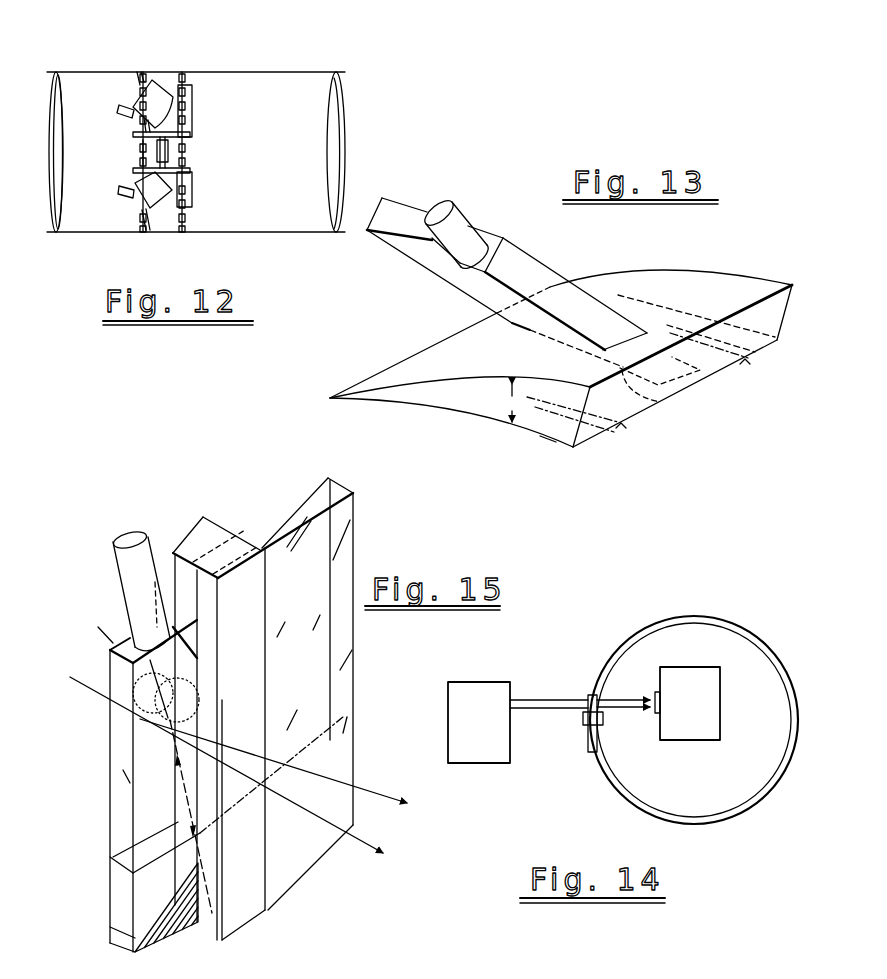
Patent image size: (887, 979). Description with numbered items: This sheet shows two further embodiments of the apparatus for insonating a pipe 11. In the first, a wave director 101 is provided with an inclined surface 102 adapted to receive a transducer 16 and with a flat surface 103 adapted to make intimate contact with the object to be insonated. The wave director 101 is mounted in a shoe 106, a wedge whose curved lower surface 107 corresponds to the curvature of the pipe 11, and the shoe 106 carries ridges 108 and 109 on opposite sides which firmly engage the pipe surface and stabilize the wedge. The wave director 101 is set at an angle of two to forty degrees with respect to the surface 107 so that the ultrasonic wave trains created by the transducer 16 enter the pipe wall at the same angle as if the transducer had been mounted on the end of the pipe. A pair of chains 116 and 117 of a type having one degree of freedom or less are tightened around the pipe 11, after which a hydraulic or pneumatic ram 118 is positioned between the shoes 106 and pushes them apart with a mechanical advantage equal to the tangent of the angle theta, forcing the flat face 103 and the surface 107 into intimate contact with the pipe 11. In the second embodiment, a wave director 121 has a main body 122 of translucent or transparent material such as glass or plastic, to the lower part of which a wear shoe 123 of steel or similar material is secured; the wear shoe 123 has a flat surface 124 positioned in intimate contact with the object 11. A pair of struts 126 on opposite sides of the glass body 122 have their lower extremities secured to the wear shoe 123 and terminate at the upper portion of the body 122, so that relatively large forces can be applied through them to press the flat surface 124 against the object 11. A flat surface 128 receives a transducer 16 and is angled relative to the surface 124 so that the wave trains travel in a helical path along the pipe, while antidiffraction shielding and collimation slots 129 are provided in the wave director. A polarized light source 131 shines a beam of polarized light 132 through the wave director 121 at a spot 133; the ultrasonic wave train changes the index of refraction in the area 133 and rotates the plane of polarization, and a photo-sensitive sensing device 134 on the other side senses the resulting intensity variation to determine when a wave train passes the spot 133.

In FIG. 14, the pipe 11 is at (702, 615).
In FIG. 13, the transducer 16 is at (468, 237).
In FIG. 15, the transducer 16 is at (157, 550).
In FIG. 12, the wave director 101 is at (159, 86).
In FIG. 13, the wave director 101 is at (402, 204).
In FIG. 13, the inclined surface 102 is at (460, 265).
In FIG. 13, the flat surface 103 is at (657, 404).
In FIG. 12, the shoe 106 is at (188, 183).
In FIG. 13, the shoe 106 is at (422, 408).
In FIG. 13, the curved lower surface 107 is at (550, 440).
In FIG. 13, the ridge 108 is at (623, 428).
In FIG. 13, the ridge 109 is at (745, 362).
In FIG. 12, the chain 116 is at (190, 85).
In FIG. 12, the chain 117 is at (140, 152).
In FIG. 12, the hydraulic or pneumatic ram 118 is at (187, 152).
In FIG. 15, the wave director 121 is at (360, 732).
In FIG. 14, the wave director 121 is at (586, 760).
In FIG. 15, the main body 122 is at (355, 692).
In FIG. 15, the wear shoe 123 is at (317, 842).
In FIG. 15, the flat surface 124 is at (227, 910).
In FIG. 15, the strut 126 is at (207, 528).
In FIG. 15, the flat surface 128 is at (123, 646).
In FIG. 15, the antidiffraction shielding and collimation slot 129 is at (190, 643).
In FIG. 14, the polarized light source 131 is at (480, 688).
In FIG. 14, the beam of polarized light 132 is at (555, 698).
In FIG. 15, the spot 133 is at (140, 727).
In FIG. 14, the photo-sensitive sensing device 134 is at (692, 733).